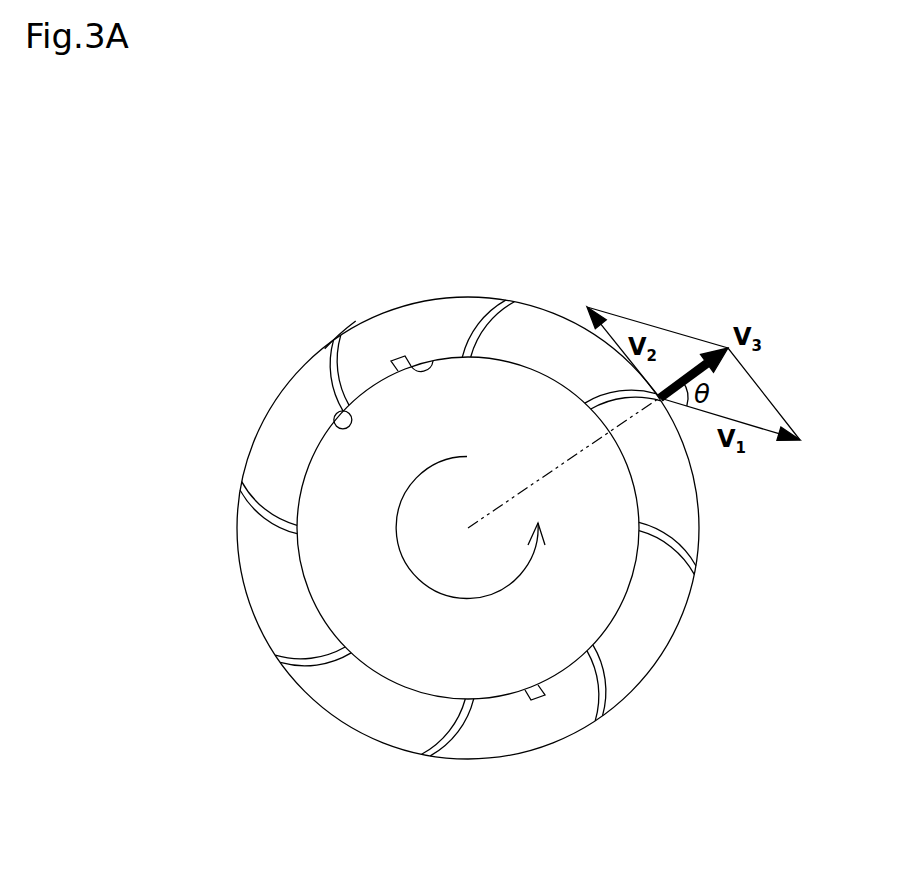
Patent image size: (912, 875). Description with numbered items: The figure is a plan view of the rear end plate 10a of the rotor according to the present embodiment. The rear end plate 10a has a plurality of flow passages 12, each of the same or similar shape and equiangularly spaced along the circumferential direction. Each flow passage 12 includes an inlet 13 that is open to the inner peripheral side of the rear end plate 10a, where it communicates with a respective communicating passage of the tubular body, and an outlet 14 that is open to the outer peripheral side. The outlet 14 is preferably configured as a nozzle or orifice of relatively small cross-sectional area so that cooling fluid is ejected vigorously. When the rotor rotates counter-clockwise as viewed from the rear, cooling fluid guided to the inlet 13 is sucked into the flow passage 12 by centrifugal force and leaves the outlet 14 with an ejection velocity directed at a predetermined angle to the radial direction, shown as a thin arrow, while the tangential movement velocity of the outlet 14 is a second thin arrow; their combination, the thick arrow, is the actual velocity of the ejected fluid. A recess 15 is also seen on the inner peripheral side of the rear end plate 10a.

The rear end plate 10a is at (542, 298).
The flow passage 12 is at (332, 377).
The inlet 13 is at (330, 430).
The outlet 14 is at (337, 336).
The notch 15 is at (431, 366).